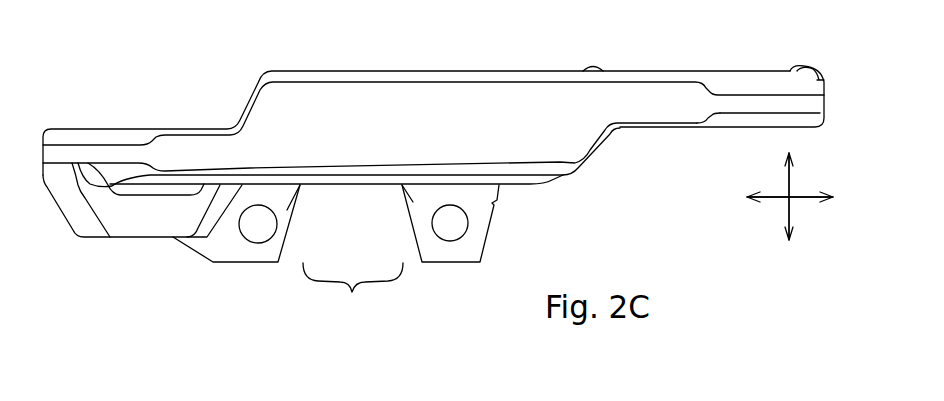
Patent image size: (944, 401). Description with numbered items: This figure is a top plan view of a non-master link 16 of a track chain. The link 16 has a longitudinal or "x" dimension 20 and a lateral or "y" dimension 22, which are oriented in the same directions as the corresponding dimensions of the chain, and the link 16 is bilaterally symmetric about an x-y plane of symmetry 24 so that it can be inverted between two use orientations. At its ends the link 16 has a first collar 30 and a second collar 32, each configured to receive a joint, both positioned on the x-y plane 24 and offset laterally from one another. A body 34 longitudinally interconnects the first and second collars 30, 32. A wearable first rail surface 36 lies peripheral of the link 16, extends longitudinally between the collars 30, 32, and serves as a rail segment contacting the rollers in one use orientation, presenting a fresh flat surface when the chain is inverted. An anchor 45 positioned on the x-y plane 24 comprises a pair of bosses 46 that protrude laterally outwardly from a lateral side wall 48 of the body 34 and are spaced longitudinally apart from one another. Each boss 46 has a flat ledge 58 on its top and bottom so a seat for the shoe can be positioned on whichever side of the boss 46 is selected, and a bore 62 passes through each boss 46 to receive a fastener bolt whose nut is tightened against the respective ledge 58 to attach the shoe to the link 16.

The non-master link 16 is at (135, 103).
The longitudinal dimension 20 is at (773, 198).
The lateral dimension 22 is at (797, 214).
The x-y plane of symmetry 24 is at (670, 198).
The first collar 30 is at (122, 230).
The second collar 32 is at (752, 80).
The body 34 is at (335, 182).
The first rail surface 36 is at (407, 100).
The anchor 45 is at (353, 293).
The boss 46 is at (287, 210).
The lateral side wall 48 is at (517, 183).
The flat ledge 58 is at (220, 243).
The bore 62 is at (265, 228).